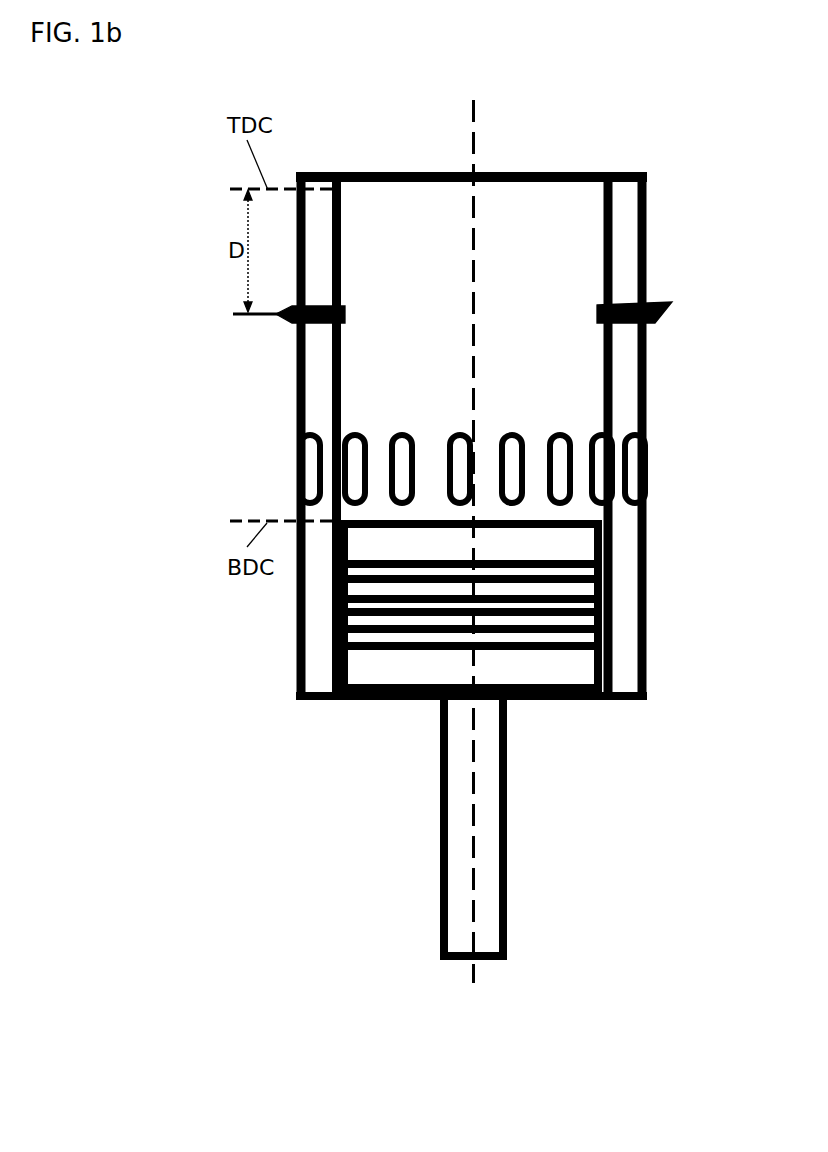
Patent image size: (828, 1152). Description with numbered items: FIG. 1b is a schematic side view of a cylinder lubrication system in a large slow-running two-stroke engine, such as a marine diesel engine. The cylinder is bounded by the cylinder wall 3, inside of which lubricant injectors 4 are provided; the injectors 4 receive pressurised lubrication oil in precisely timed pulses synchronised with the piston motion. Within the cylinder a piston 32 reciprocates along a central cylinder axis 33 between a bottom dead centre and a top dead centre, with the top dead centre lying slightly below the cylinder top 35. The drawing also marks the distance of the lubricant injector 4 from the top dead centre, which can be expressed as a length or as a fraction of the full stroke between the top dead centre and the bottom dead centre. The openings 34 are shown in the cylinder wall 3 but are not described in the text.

The cylinder wall 3 is at (625, 370).
The lubricant injector 4 is at (480, 295).
The piston 32 is at (580, 543).
The central cylinder axis 33 is at (472, 545).
The openings 34 is at (636, 481).
The cylinder top 35 is at (558, 173).